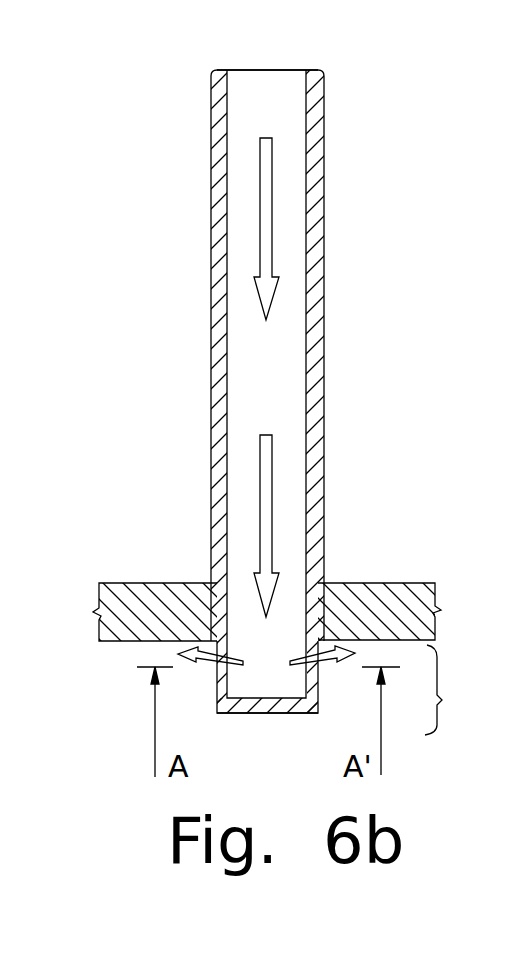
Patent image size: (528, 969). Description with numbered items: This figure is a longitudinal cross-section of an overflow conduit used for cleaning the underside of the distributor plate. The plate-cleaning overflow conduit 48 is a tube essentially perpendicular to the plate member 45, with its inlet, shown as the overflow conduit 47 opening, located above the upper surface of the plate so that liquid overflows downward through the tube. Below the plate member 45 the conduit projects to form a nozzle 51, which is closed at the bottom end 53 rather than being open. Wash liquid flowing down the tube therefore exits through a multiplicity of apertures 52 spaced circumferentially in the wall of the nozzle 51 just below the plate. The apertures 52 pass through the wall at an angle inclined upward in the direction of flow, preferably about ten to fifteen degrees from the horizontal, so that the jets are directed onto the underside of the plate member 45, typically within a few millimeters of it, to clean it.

The plate member 45 is at (137, 583).
The overflow conduit 47 is at (280, 70).
The plate-cleaning overflow conduit 48 is at (338, 293).
The nozzle 51 is at (440, 700).
The aperture 52 is at (218, 673).
The bottom end 53 is at (268, 713).